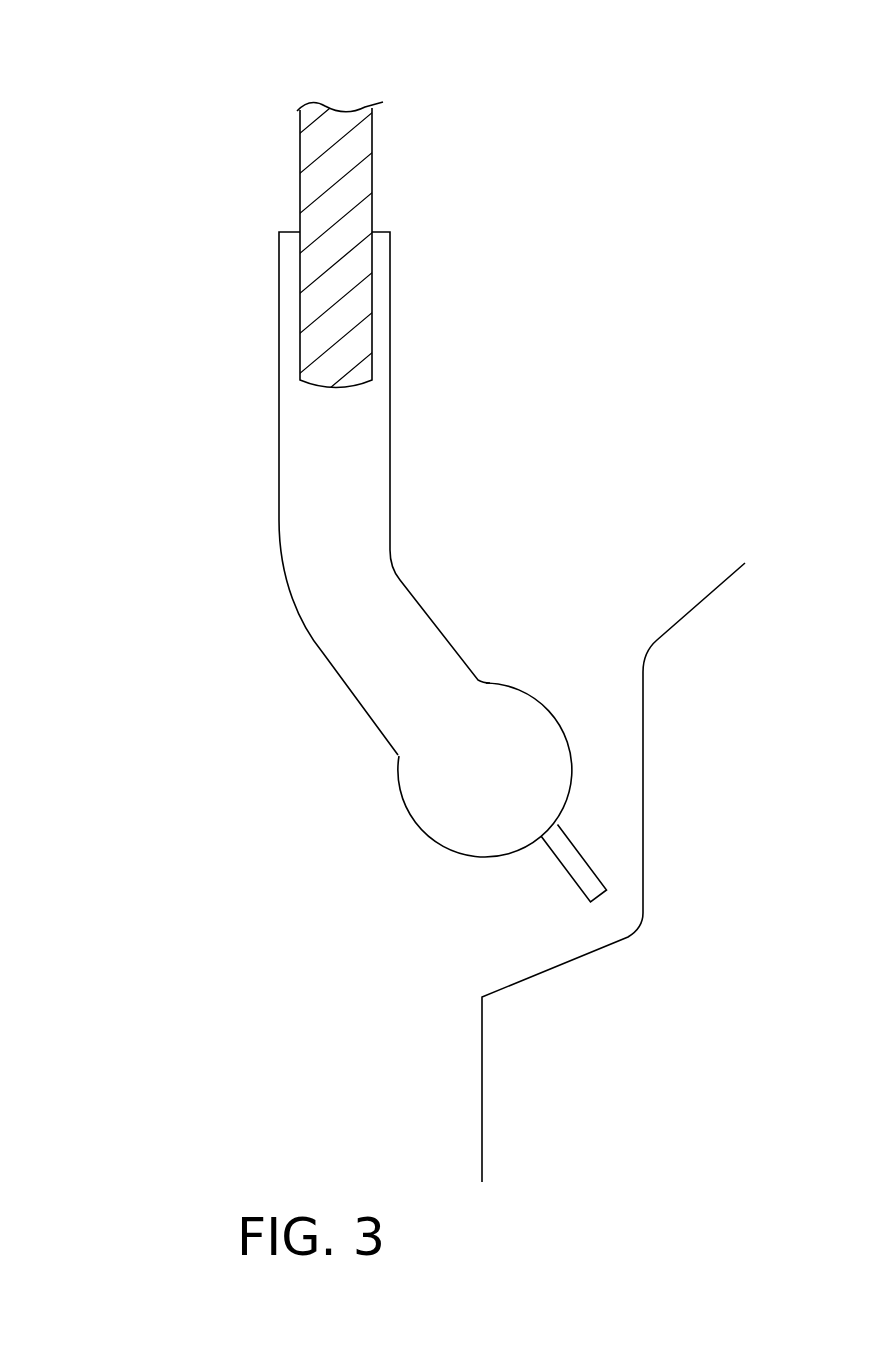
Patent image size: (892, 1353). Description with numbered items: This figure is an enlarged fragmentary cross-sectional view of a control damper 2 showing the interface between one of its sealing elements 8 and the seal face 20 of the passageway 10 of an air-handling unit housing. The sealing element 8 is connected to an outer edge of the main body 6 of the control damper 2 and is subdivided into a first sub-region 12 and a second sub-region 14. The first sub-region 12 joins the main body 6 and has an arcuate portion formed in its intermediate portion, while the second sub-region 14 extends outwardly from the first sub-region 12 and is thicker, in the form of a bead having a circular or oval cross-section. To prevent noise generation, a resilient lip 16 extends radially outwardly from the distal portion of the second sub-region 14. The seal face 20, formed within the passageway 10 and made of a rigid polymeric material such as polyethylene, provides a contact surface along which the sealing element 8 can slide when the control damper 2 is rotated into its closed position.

The control damper 2 is at (186, 138).
The main body 6 is at (360, 138).
The sealing element 8 is at (245, 226).
The passageway 10 is at (407, 307).
The first sub-region 12 is at (368, 480).
The second sub-region 14 is at (473, 783).
The resilient lip 16 is at (582, 876).
The seal face 20 is at (643, 802).